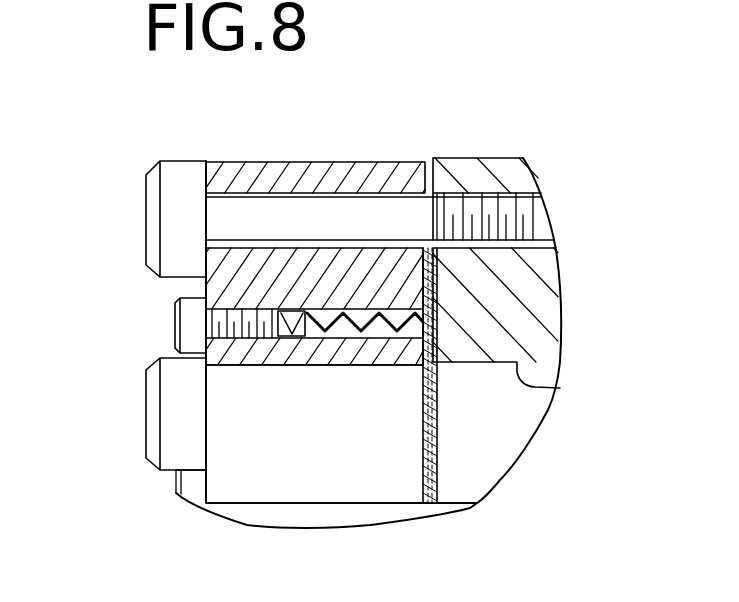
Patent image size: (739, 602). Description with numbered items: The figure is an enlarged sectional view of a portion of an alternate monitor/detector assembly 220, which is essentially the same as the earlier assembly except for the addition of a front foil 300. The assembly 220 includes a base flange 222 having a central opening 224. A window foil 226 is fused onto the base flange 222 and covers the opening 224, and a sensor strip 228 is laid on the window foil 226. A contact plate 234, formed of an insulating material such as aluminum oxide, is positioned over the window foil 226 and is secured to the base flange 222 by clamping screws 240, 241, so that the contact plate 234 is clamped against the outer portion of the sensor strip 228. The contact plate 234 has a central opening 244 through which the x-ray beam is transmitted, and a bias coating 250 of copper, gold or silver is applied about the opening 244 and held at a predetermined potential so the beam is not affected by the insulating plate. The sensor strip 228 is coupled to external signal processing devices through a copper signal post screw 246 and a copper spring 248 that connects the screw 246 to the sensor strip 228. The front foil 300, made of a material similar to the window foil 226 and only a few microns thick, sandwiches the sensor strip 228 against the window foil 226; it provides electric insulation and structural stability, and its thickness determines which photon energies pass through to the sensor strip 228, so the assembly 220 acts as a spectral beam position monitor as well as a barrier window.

The monitor/detector assembly 220 is at (588, 498).
The base flange 222 is at (505, 172).
The central opening 224 is at (545, 388).
The window foil 226 is at (436, 490).
The sensor strip 228 is at (423, 470).
The contact plate 234 is at (279, 160).
The clamping screw 240 is at (180, 187).
The clamping screw 241 is at (180, 382).
The central opening 244 is at (231, 422).
The signal post screw 246 is at (185, 316).
The spring 248 is at (312, 314).
The bias coating 250 is at (307, 365).
The front foil 300 is at (418, 421).